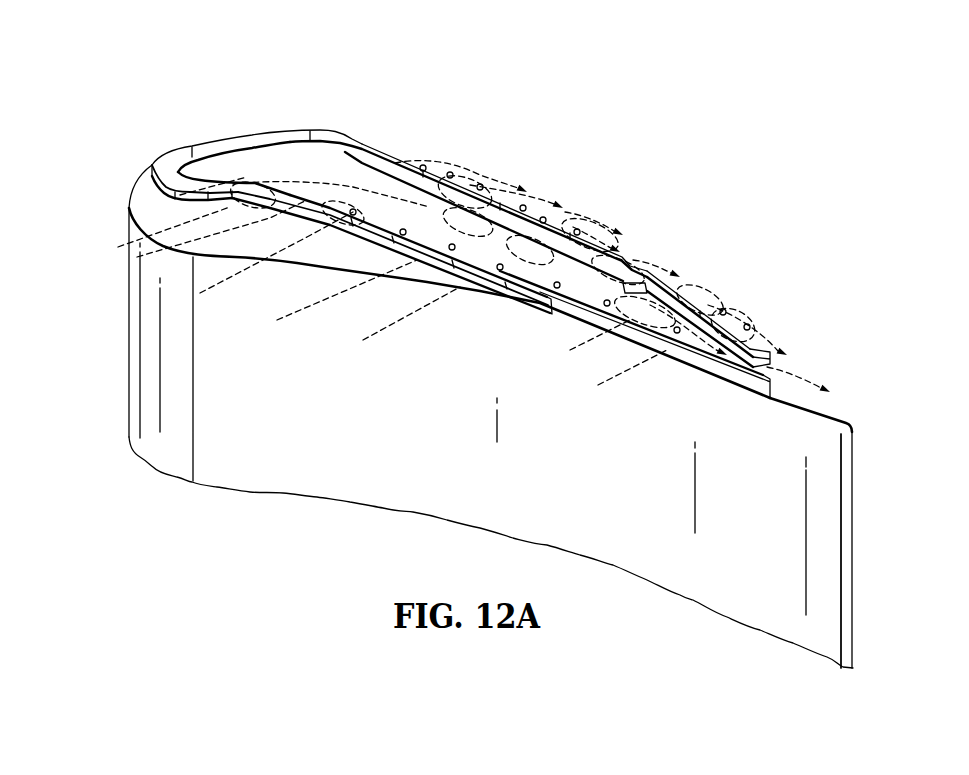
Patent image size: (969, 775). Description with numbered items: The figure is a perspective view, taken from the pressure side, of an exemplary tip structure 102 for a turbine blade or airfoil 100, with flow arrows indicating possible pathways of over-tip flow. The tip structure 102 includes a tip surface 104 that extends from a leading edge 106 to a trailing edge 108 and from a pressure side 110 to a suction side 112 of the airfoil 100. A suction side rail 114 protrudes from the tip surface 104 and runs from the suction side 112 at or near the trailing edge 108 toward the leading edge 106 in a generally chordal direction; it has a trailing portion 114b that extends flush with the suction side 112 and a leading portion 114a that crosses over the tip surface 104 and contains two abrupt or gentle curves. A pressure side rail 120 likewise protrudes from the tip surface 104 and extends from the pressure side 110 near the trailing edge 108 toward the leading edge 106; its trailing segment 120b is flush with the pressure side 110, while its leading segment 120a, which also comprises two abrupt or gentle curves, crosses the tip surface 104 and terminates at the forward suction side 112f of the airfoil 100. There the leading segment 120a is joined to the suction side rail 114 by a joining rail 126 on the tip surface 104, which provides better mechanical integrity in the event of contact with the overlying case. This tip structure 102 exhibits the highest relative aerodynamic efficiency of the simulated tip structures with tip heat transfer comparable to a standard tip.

The airfoil 100 is at (627, 120).
The tip structure 102 is at (491, 381).
The tip surface 104 is at (293, 164).
The leading edge 106 is at (112, 209).
The trailing edge 108 is at (852, 400).
The pressure side 110 is at (377, 276).
The suction side 112 is at (453, 168).
The forward suction side 112f is at (186, 143).
The suction side rail 114 is at (530, 226).
The leading portion of the suction side rail 114a is at (403, 130).
The trailing portion of the suction side rail 114b is at (690, 298).
The pressure side rail 120 is at (500, 308).
The leading segment of the pressure side rail 120a is at (312, 225).
The trailing segment of the pressure side rail 120b is at (700, 364).
The joining rail 126 is at (254, 134).